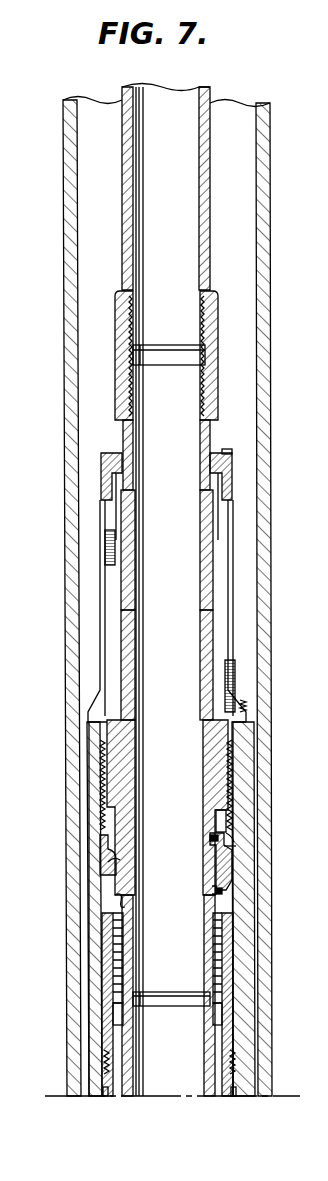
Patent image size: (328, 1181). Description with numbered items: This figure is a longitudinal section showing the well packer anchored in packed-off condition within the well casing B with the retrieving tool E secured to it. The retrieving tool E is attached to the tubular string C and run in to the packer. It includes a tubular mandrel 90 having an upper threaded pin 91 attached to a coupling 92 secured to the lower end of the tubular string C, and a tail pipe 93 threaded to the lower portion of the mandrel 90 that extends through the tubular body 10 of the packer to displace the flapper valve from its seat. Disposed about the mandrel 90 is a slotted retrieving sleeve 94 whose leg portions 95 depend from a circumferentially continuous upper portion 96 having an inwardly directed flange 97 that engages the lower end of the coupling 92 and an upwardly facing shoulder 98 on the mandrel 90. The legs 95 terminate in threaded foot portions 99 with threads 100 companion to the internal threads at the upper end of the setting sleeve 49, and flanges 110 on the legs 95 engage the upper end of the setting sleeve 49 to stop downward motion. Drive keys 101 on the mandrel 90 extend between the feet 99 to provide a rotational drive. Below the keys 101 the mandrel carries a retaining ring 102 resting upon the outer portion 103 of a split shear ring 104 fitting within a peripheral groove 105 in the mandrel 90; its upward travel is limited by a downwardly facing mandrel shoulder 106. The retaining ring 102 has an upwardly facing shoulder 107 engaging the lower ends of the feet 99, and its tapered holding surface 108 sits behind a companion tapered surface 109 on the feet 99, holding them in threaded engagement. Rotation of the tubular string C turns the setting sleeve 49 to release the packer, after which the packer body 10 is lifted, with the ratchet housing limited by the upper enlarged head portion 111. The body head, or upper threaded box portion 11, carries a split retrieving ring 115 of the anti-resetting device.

The well casing B is at (263, 276).
The tubular string C is at (212, 94).
The retrieving tool E is at (248, 680).
The tubular body 10 is at (236, 1040).
The upper threaded box portion 11 is at (233, 958).
The setting sleeve 49 is at (246, 998).
The tubular mandrel 90 is at (207, 667).
The upper threaded pin 91 is at (203, 414).
The coupling 92 is at (215, 381).
The tail pipe 93 is at (203, 1097).
The retrieving sleeve 94 is at (244, 551).
The leg portions 95 is at (106, 600).
The upper portion 96 is at (232, 484).
The inwardly directed flange 97 is at (223, 455).
The upwardly facing shoulder 98 is at (208, 498).
The threaded foot portions 99 is at (232, 818).
The threads 100 is at (248, 771).
The drive keys 101 is at (92, 723).
The retaining ring 102 is at (232, 868).
The outer portion 103 is at (222, 892).
The split shear ring 104 is at (212, 895).
The peripheral groove 105 is at (122, 907).
The downwardly facing mandrel shoulder 106 is at (211, 839).
The upwardly facing shoulder 107 is at (236, 847).
The tapered holding surface 108 is at (230, 838).
The tapered surface 109 is at (114, 860).
The flanges 110 is at (248, 713).
The upper enlarged head portion 111 is at (238, 1088).
The split retrieving ring 115 is at (238, 1062).